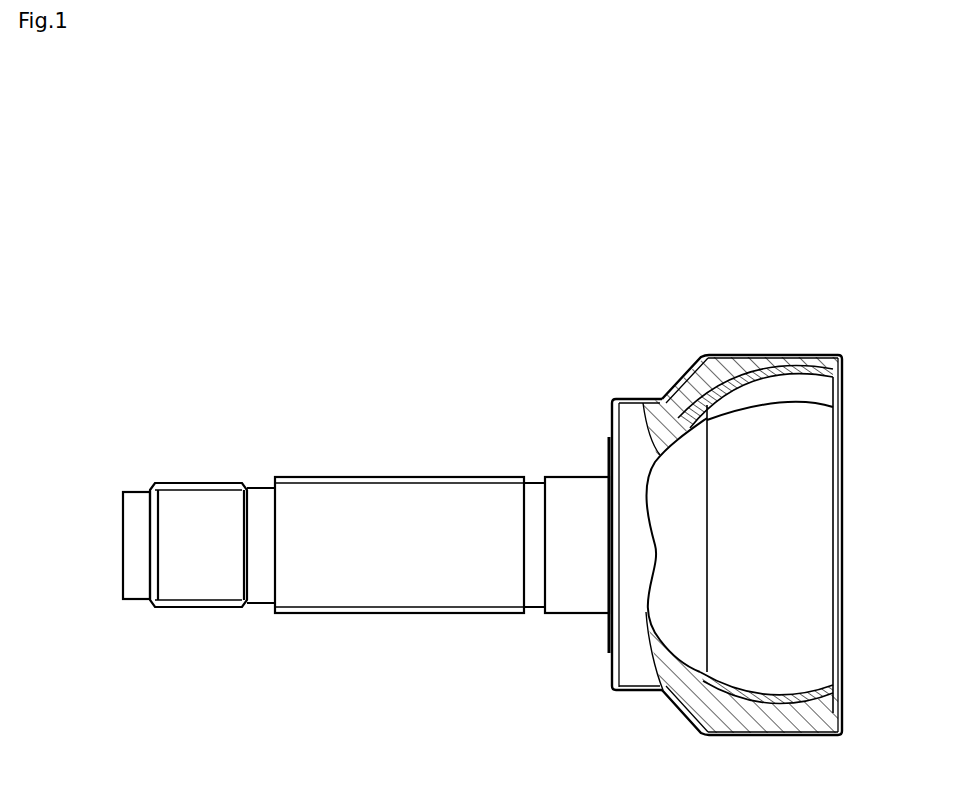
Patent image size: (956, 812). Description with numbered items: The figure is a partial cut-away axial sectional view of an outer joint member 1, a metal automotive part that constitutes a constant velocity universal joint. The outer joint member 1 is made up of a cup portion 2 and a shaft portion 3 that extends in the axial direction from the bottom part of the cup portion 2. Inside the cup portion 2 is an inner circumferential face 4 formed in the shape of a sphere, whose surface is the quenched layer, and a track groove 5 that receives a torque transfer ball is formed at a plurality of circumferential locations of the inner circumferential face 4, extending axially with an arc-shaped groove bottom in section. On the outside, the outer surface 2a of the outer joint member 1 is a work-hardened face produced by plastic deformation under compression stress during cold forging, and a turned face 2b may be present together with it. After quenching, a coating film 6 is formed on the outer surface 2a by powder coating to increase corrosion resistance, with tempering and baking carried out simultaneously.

The outer joint member 1 is at (512, 322).
The cup portion 2 is at (823, 360).
The outer surface 2a is at (742, 354).
The turned face 2b is at (621, 398).
The shaft portion 3 is at (578, 488).
The inner circumferential face 4 is at (794, 403).
The track groove 5 is at (843, 356).
The coating film 6 is at (683, 376).